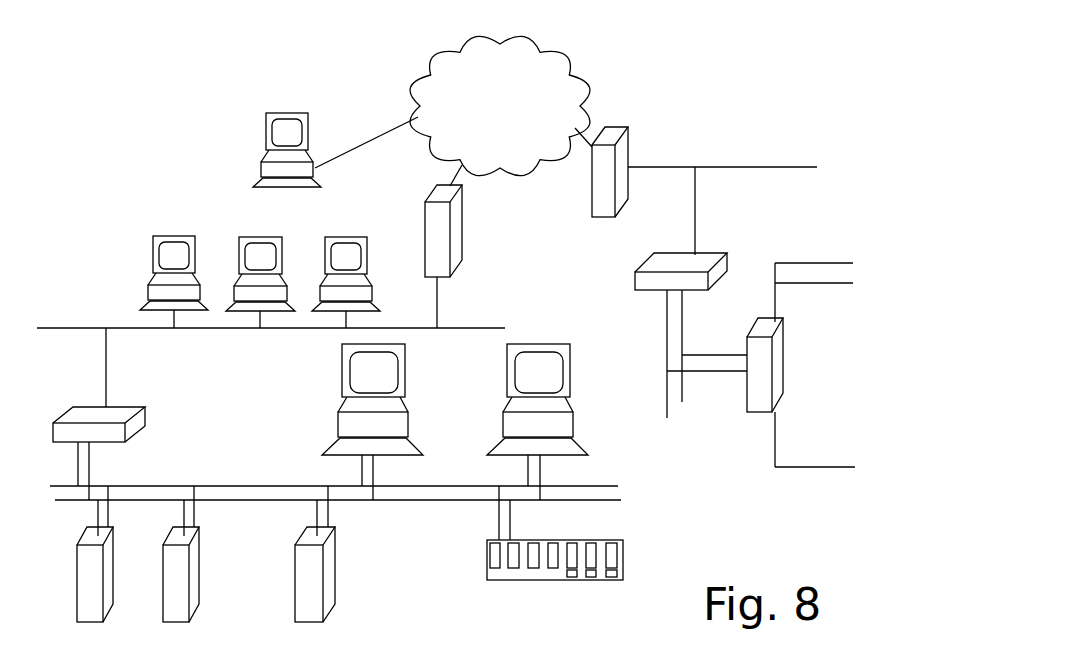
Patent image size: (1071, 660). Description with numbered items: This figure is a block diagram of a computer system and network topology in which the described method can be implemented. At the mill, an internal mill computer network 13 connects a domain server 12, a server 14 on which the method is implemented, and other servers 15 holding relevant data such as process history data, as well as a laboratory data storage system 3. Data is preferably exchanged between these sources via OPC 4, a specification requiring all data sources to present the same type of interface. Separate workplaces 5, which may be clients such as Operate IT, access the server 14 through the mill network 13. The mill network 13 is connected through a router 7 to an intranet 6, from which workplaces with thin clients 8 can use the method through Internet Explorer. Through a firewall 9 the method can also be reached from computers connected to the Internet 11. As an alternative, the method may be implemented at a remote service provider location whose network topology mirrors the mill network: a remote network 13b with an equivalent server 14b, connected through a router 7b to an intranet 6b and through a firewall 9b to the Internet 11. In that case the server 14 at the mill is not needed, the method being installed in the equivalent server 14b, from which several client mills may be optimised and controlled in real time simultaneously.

The laboratory data storage system 3 is at (187, 572).
The OPC 4 is at (515, 573).
The workplaces 5 is at (372, 422).
The intranet 6 is at (220, 328).
The router 7 is at (130, 433).
The thin clients 8 is at (168, 253).
The firewall 9 is at (450, 243).
The Internet 11 is at (527, 177).
The domain server 12 is at (102, 557).
The internal mill computer network 13 is at (438, 500).
The server 14 is at (325, 573).
The other servers 15 is at (282, 133).
The intranet 6b is at (695, 205).
The router 7b is at (643, 283).
The firewall 9b is at (612, 195).
The remote network 13b is at (682, 402).
The equivalent server 14b is at (753, 405).